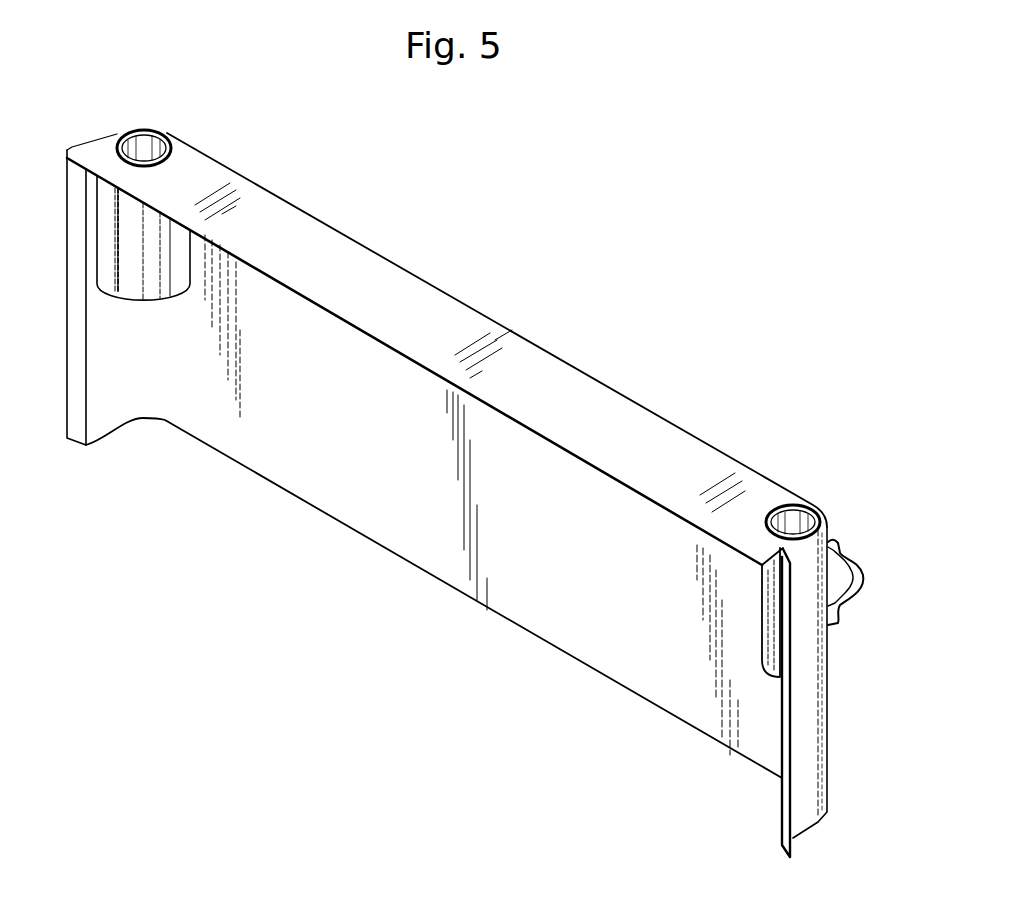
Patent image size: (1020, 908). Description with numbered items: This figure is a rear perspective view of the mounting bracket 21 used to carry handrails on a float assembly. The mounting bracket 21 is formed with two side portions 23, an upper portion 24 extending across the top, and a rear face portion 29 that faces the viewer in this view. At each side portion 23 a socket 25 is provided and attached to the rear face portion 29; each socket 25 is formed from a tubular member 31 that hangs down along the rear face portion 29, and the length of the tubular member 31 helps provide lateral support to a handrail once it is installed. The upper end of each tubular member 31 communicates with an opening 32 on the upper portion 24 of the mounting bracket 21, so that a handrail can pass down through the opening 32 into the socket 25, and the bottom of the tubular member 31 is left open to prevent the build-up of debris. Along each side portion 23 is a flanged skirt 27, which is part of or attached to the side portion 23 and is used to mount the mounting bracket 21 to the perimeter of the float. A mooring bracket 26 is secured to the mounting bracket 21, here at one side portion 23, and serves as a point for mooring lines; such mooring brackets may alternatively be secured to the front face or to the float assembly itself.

The mounting bracket 21 is at (477, 473).
The side portion 23 is at (808, 766).
The upper portion 24 is at (592, 398).
The socket 25 is at (148, 152).
The mooring bracket 26 is at (865, 582).
The flanged skirt 27 is at (70, 148).
The rear face portion 29 is at (404, 523).
The tubular member 31 is at (140, 260).
The opening 32 is at (172, 146).